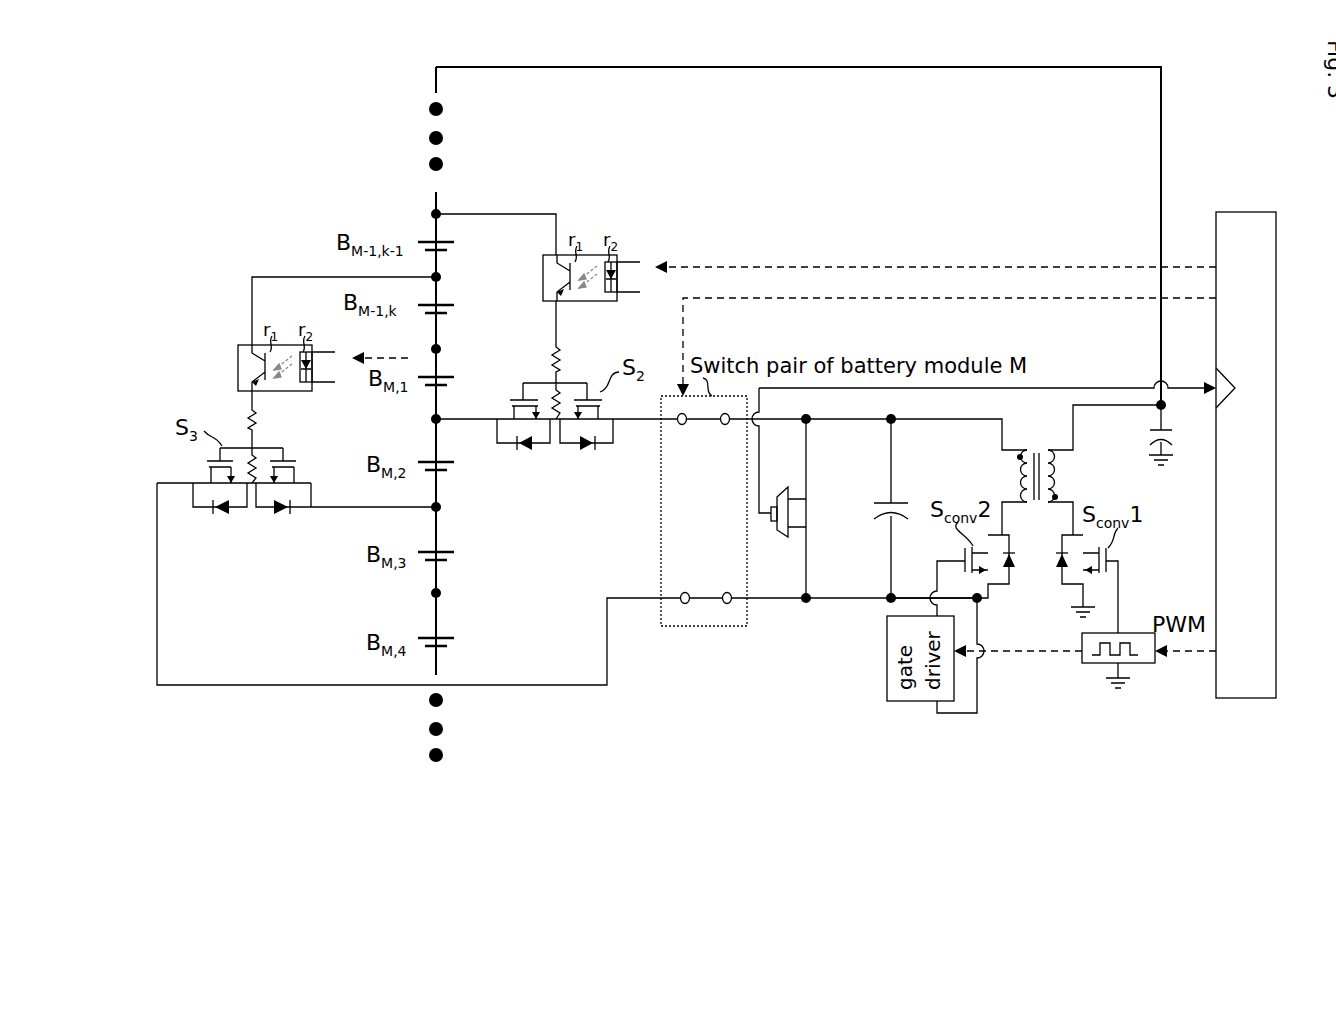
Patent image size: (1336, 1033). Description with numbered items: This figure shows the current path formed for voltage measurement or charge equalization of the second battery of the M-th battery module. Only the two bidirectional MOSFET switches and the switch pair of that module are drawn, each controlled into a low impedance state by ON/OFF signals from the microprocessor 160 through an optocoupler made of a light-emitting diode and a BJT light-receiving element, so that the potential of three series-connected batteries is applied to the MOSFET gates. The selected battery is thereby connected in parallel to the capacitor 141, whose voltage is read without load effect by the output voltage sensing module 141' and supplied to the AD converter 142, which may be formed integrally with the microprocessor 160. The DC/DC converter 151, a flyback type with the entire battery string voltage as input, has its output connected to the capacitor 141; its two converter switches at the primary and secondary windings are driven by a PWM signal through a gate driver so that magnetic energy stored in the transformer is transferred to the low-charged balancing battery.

The capacitor 141 is at (868, 508).
The output voltage sensing module 141' is at (775, 536).
The AD converter 142 is at (1212, 381).
The DC/DC converter 151 is at (1035, 447).
The microprocessor 160 is at (1232, 212).